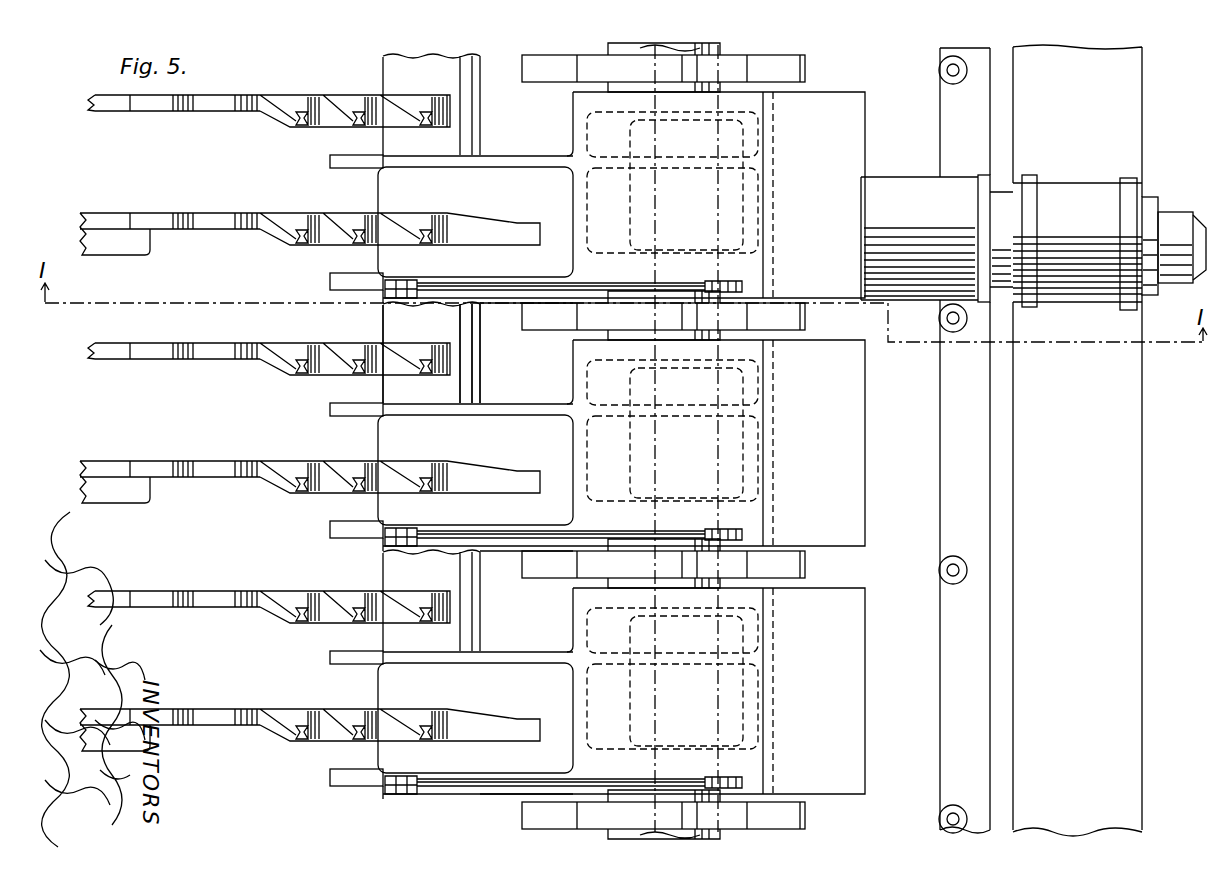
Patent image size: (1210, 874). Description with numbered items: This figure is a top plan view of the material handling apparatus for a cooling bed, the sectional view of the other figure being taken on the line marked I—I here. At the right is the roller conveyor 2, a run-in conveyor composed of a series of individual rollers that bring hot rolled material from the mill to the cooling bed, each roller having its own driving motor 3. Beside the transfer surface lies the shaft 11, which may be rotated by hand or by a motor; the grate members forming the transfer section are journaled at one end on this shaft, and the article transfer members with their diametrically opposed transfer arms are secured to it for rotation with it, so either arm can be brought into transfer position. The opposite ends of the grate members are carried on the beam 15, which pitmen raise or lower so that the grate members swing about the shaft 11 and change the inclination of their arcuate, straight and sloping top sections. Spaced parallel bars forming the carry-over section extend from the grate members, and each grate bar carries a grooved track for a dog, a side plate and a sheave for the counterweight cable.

The roller conveyor 2 is at (893, 185).
The driving motor 3 is at (1065, 190).
The shaft 11 is at (781, 443).
The beam 15 is at (407, 353).